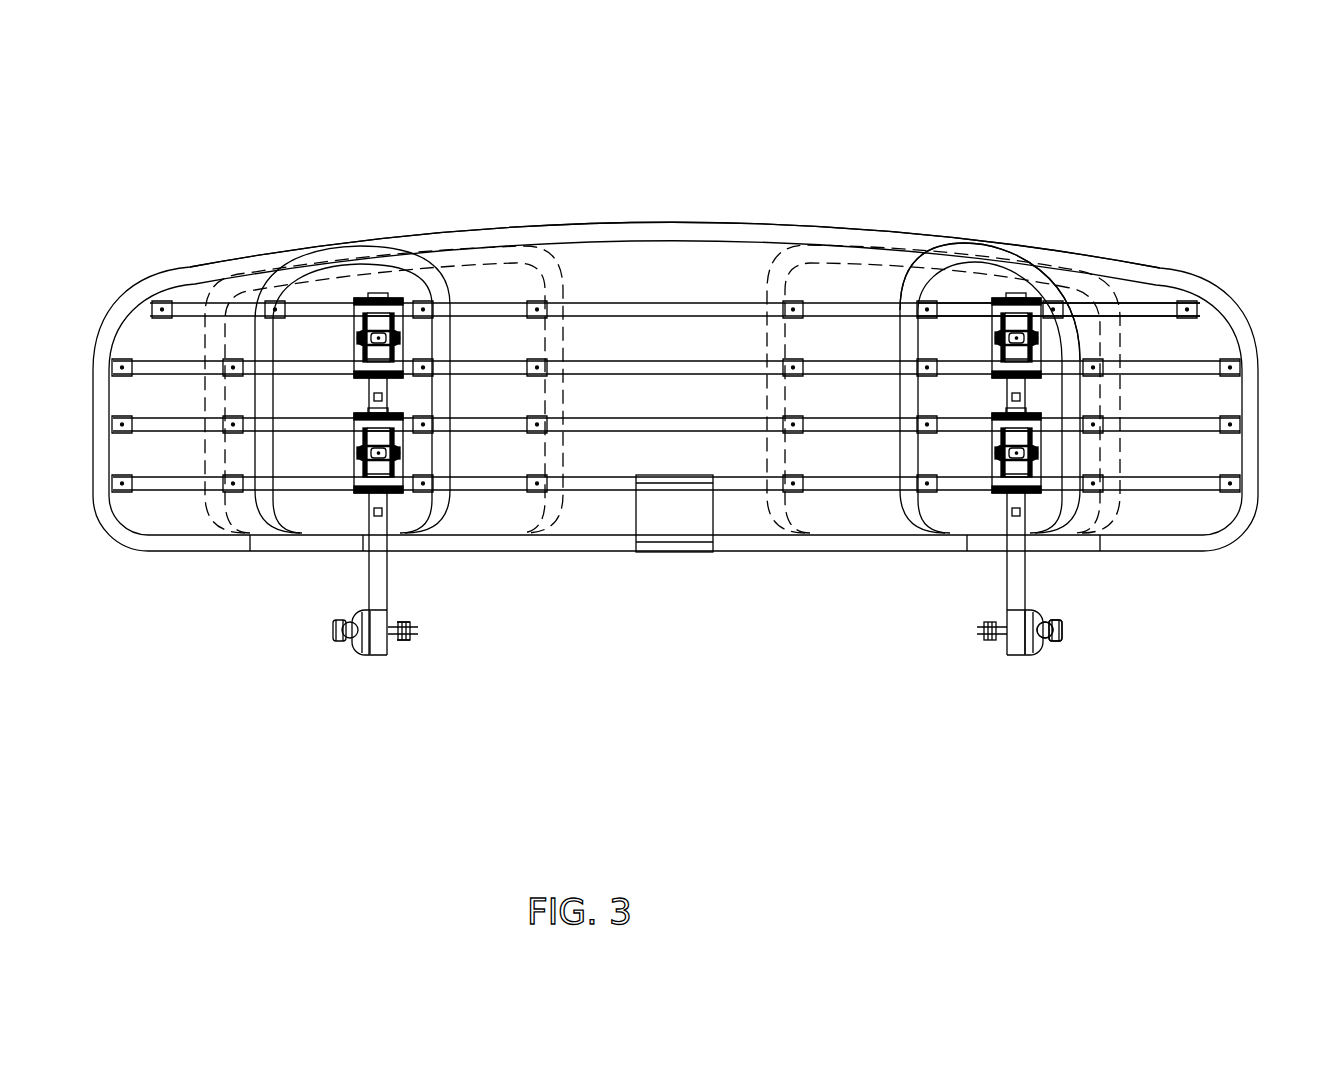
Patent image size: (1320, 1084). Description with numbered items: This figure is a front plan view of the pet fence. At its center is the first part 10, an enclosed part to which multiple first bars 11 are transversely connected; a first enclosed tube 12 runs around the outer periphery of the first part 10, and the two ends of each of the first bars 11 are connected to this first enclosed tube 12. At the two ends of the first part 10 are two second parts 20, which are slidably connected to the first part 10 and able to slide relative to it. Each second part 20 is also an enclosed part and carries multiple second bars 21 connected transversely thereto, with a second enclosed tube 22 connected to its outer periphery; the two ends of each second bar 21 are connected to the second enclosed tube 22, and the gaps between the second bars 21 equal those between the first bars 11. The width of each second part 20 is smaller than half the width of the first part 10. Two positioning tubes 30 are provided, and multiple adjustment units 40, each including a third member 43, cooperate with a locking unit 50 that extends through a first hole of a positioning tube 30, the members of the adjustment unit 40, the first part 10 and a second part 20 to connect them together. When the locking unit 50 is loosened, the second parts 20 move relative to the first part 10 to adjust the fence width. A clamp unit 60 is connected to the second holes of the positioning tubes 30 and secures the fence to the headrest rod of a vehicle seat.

The first part 10 is at (687, 200).
The first bars 11 is at (612, 302).
The first enclosed tube 12 is at (571, 236).
The second parts 20 is at (345, 262).
The second bars 21 is at (1133, 318).
The second enclosed tube 22 is at (1177, 290).
The positioning tubes 30 is at (378, 597).
The adjustment units 40 is at (343, 460).
The third member 43 is at (392, 483).
The locking unit 50 is at (355, 340).
The clamp unit 60 is at (1054, 664).